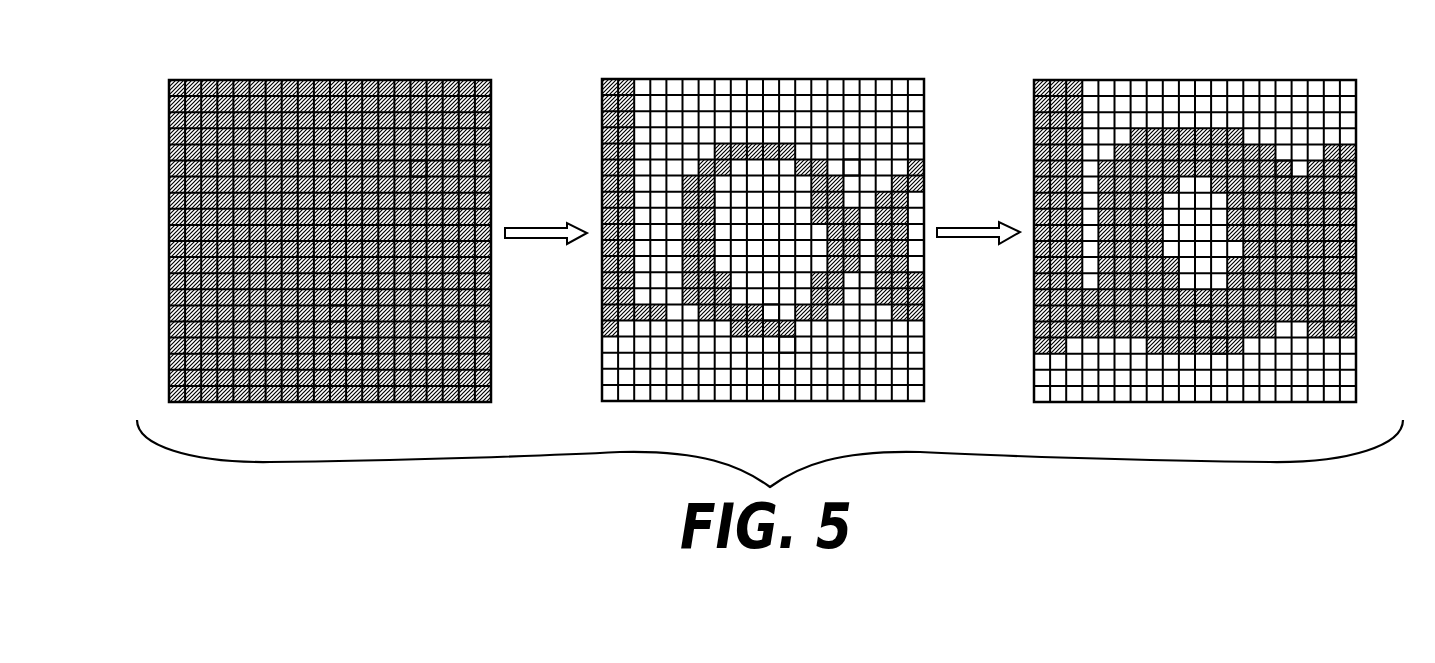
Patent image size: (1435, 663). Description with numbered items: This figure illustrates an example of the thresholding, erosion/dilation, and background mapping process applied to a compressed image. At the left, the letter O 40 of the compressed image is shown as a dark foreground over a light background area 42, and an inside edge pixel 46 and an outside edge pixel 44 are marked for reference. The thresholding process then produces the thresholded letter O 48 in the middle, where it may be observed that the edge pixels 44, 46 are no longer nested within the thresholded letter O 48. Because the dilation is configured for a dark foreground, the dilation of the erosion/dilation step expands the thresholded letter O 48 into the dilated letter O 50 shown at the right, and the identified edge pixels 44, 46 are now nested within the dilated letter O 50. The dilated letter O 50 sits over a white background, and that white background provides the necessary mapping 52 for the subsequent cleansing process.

The letter O 40 is at (418, 171).
The light background area 42 is at (417, 103).
The outside edge pixel 44 is at (352, 345).
The inside edge pixel 46 is at (337, 315).
The thresholded letter O 48 is at (848, 171).
The dilated letter O 50 is at (1282, 170).
The mapping 52 is at (1282, 105).